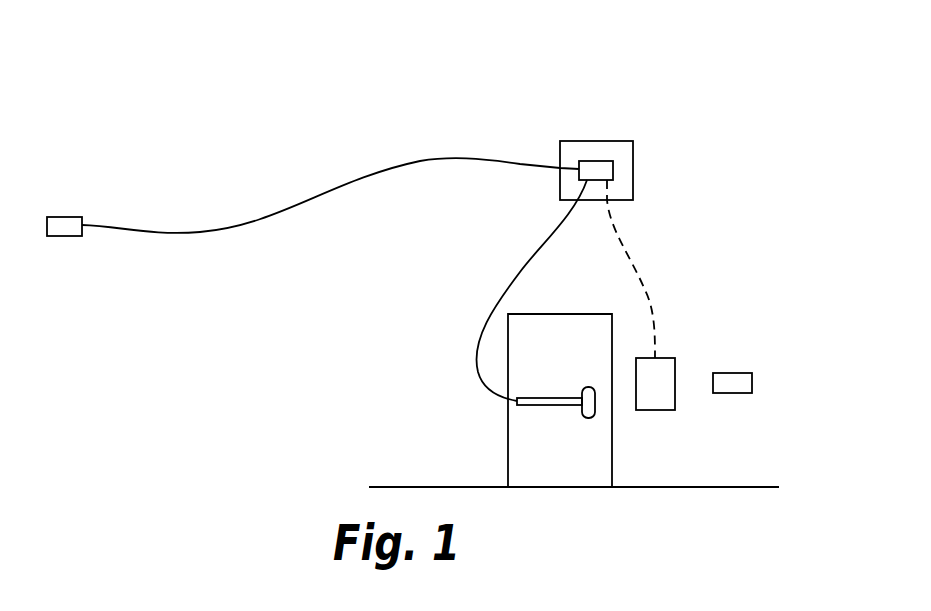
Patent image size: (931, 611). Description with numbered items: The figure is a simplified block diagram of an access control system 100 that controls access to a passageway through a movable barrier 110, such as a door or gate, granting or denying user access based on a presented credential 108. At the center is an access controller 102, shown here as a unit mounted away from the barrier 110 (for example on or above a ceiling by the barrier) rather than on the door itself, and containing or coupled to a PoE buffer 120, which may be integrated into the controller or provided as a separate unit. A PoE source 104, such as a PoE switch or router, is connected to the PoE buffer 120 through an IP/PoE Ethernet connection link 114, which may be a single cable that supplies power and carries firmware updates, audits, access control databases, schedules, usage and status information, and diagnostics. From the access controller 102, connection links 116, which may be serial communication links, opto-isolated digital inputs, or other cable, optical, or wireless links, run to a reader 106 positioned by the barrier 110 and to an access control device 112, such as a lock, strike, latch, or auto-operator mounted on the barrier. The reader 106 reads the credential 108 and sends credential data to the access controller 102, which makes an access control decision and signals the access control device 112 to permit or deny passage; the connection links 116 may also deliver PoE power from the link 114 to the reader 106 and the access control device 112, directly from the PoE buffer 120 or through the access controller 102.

The access control system 100 is at (775, 125).
The access controller 102 is at (633, 152).
The PoE source 104 is at (72, 217).
The reader 106 is at (668, 358).
The credential 108 is at (737, 373).
The movable barrier 110 is at (567, 458).
The access control device 112 is at (537, 404).
The IP/PoE Ethernet connection link 114 is at (333, 183).
The connection link 116 is at (513, 270).
The PoE buffer 120 is at (594, 161).